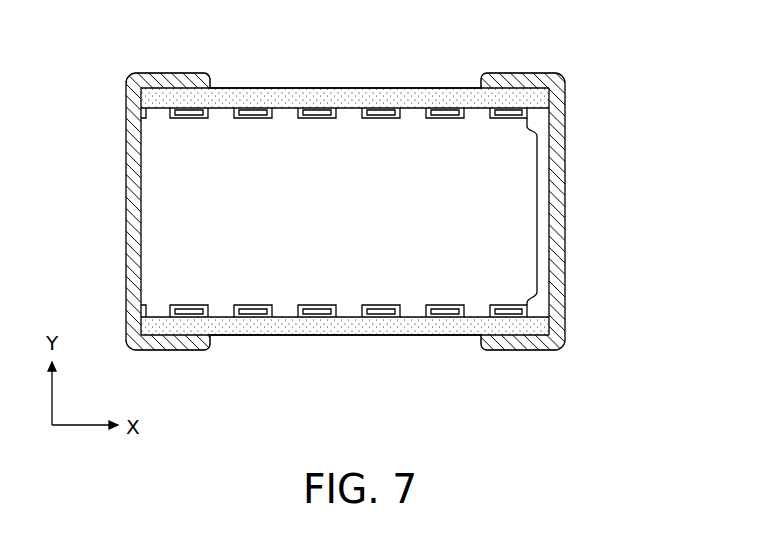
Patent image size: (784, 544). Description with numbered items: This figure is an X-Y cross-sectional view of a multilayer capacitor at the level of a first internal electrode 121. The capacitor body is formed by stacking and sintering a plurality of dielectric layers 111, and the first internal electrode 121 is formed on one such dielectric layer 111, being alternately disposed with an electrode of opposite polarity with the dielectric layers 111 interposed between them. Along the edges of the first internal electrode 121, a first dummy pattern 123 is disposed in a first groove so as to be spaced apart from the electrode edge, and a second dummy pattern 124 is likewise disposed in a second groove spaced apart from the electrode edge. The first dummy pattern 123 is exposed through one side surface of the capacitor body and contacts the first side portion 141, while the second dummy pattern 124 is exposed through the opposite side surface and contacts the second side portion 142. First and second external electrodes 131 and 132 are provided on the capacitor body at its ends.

The dielectric layer 111 is at (556, 205).
The first internal electrode 121 is at (163, 210).
The first dummy pattern 123 is at (385, 317).
The second dummy pattern 124 is at (380, 110).
The first external electrode 131 is at (180, 73).
The second external electrode 132 is at (520, 73).
The first side portion 141 is at (287, 335).
The second side portion 142 is at (291, 88).